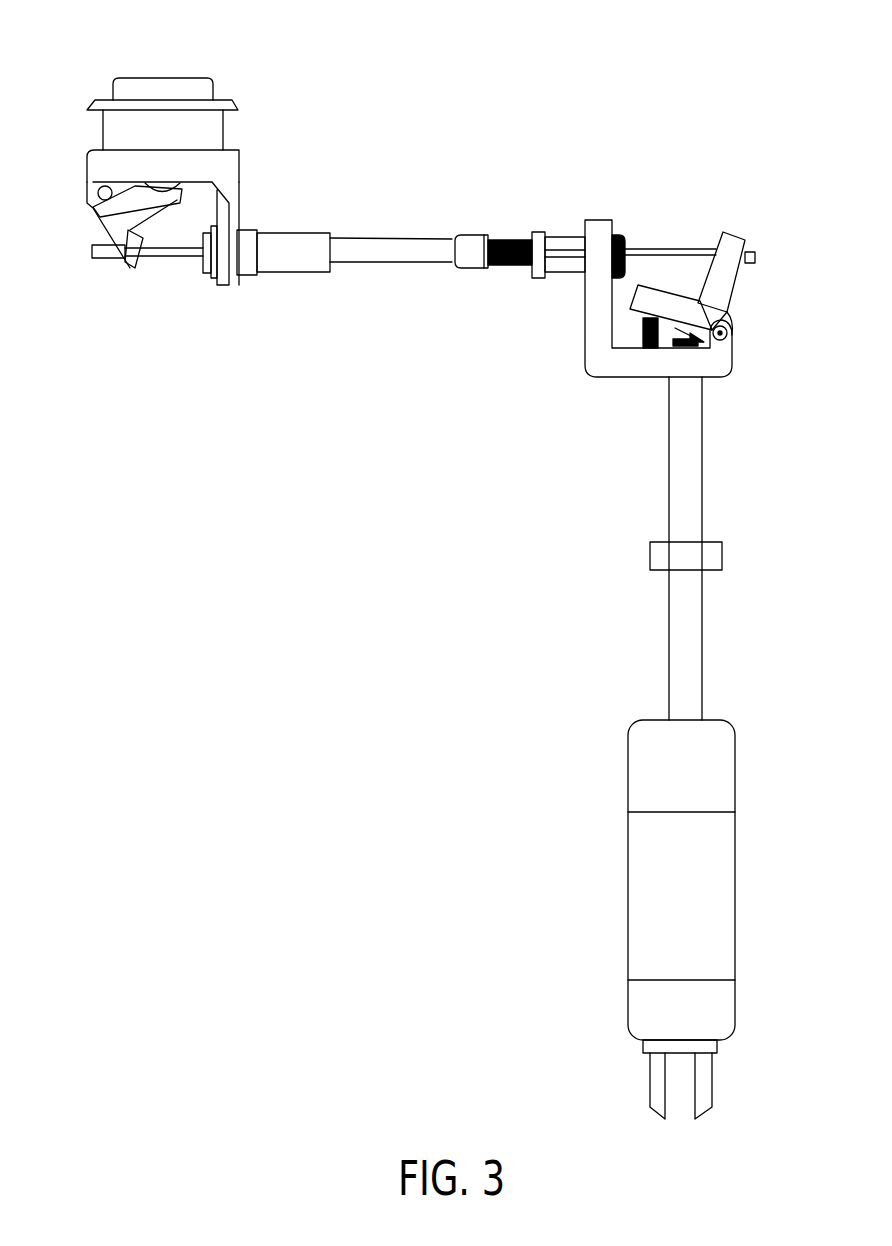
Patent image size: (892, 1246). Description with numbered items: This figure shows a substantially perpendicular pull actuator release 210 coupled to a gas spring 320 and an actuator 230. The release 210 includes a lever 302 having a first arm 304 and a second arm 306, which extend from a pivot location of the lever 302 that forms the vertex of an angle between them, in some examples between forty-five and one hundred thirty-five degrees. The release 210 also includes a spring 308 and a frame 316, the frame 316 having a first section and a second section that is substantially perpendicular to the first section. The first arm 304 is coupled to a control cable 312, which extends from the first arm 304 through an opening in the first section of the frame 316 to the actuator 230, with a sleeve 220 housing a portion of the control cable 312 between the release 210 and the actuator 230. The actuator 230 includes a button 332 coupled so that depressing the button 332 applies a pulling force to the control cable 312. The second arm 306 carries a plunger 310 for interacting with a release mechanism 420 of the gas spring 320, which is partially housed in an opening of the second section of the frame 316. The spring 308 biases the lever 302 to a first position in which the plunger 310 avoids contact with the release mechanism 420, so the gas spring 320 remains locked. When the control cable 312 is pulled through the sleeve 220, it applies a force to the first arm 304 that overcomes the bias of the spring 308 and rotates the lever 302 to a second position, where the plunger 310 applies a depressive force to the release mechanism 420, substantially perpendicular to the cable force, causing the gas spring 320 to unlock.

The substantially perpendicular pull actuator release 210 is at (620, 207).
The sleeve 220 is at (437, 251).
The actuator 230 is at (125, 255).
The lever 302 is at (710, 318).
The first arm 304 is at (737, 252).
The second arm 306 is at (645, 303).
The spring 308 is at (652, 350).
The plunger 310 is at (727, 350).
The control cable 312 is at (677, 247).
The frame 316 is at (612, 358).
The gas spring 320 is at (712, 772).
The button 332 is at (163, 92).
The release mechanism 420 is at (690, 340).